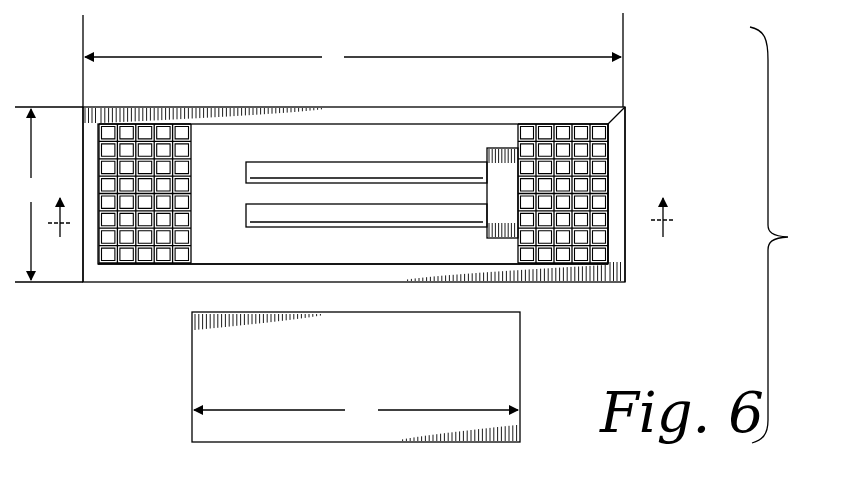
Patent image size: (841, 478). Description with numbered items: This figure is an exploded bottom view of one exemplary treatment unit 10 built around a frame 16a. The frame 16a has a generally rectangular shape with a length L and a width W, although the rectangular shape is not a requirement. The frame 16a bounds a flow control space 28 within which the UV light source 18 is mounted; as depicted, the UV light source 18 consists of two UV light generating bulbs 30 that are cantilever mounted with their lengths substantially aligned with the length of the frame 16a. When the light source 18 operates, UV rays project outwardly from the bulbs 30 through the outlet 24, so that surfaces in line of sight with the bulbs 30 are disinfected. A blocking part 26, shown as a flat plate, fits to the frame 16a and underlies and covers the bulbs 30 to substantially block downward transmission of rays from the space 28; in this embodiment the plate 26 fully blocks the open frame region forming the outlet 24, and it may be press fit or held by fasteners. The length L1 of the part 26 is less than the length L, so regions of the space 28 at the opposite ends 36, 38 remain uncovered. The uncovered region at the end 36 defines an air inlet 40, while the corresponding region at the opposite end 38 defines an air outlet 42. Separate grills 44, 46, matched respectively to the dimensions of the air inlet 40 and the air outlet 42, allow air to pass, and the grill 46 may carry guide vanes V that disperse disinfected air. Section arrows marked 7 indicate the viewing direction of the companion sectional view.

The treatment unit 10 is at (622, 95).
The frame 16a is at (629, 180).
The UV light source 18 is at (479, 194).
The outlet 24 is at (345, 252).
The blocking part 26 is at (503, 379).
The flow control space 28 is at (228, 242).
The UV light generating bulbs 30 is at (381, 212).
The end of the space 36 is at (80, 127).
The opposite end of the space 38 is at (627, 141).
The air inlet 40 is at (130, 246).
The air outlet 42 is at (581, 283).
The grill 44 is at (124, 126).
The grill 46 is at (548, 124).
The guide surfaces/vanes V is at (612, 122).
The section line for FIG. 7 is at (361, 224).
The length L is at (353, 60).
The width W is at (49, 194).
The length of the blocking part L1 is at (356, 410).